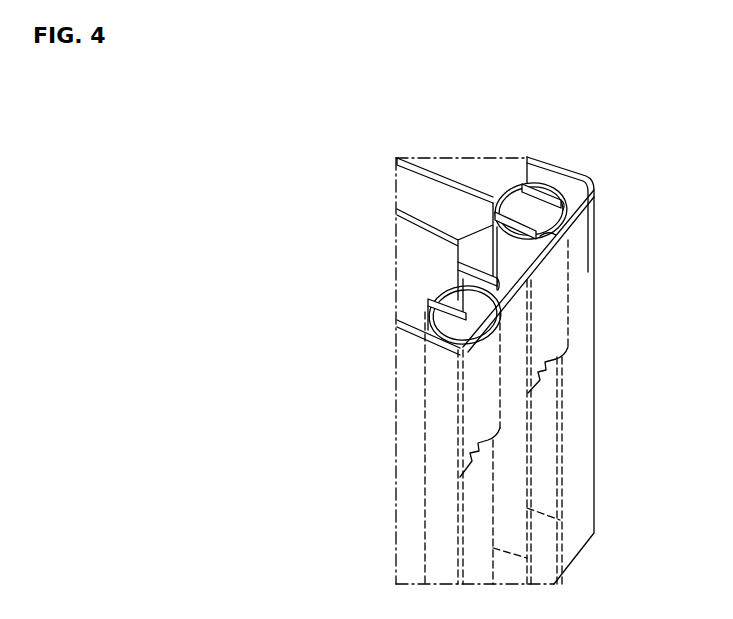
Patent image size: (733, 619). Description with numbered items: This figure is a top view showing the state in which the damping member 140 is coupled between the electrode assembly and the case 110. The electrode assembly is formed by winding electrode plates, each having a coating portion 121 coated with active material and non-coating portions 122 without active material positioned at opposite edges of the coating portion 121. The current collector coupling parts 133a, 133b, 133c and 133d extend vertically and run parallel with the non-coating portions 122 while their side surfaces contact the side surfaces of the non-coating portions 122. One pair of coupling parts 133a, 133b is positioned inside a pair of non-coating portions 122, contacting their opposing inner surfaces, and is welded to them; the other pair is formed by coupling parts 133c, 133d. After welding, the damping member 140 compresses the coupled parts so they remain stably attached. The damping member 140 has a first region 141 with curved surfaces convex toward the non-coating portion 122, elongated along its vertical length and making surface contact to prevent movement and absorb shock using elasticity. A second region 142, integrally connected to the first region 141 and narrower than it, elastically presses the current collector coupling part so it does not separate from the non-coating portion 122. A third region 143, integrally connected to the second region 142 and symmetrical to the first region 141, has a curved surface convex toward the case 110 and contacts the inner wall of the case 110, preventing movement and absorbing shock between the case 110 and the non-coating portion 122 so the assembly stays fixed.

The case 110 is at (590, 176).
The coating portion 121 is at (467, 167).
The non-coating portion 122 is at (547, 440).
The current collector coupling part 133a is at (554, 202).
The current collector coupling part 133b is at (498, 196).
The current collector coupling part 133c is at (430, 302).
The current collector coupling part 133d is at (458, 265).
The damping member 140 is at (568, 248).
The first region 141 is at (495, 205).
The second region 142 is at (570, 217).
The third region 143 is at (545, 250).